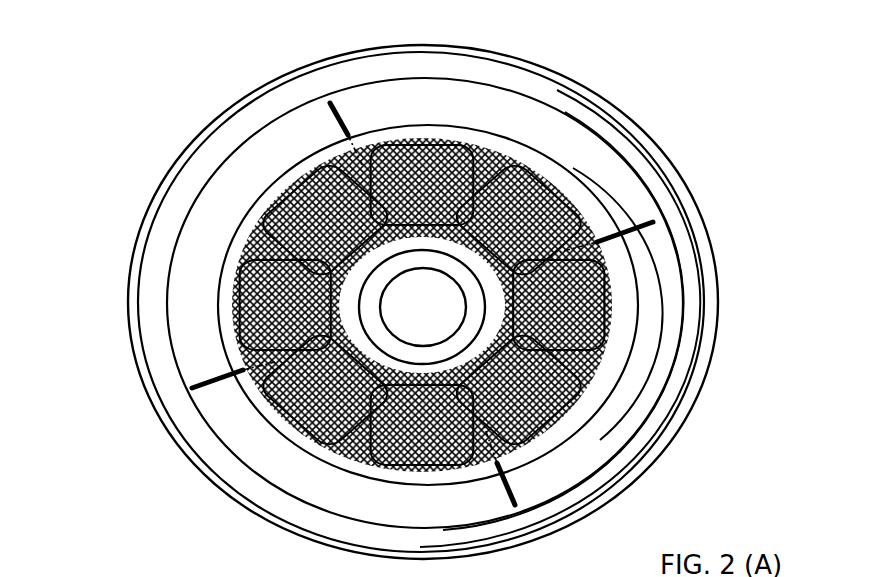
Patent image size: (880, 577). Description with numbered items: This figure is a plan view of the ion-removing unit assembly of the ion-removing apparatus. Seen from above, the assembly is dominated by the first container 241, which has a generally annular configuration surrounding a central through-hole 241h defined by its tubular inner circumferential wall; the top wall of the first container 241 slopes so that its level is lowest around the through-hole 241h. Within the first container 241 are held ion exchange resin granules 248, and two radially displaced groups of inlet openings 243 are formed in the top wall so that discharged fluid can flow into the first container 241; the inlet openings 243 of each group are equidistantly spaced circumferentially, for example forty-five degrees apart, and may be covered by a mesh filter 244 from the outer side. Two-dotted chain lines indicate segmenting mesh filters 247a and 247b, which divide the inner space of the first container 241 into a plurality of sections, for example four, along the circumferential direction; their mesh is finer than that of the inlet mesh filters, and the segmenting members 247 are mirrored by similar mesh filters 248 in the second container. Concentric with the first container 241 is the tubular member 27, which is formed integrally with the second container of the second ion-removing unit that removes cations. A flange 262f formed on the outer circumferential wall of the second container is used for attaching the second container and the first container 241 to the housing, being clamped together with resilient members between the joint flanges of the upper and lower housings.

The first container 241 is at (553, 148).
The central through-hole 241h is at (423, 253).
The inlet openings 243 is at (573, 397).
The ring 244 is at (590, 233).
The pin 247 is at (328, 105).
The ion exchange resin granules 248 is at (370, 299).
The segmenting mesh filter 247a is at (632, 238).
The segmenting mesh filter 247b is at (578, 247).
The flange 262f is at (158, 363).
The tubular member 27 is at (393, 343).